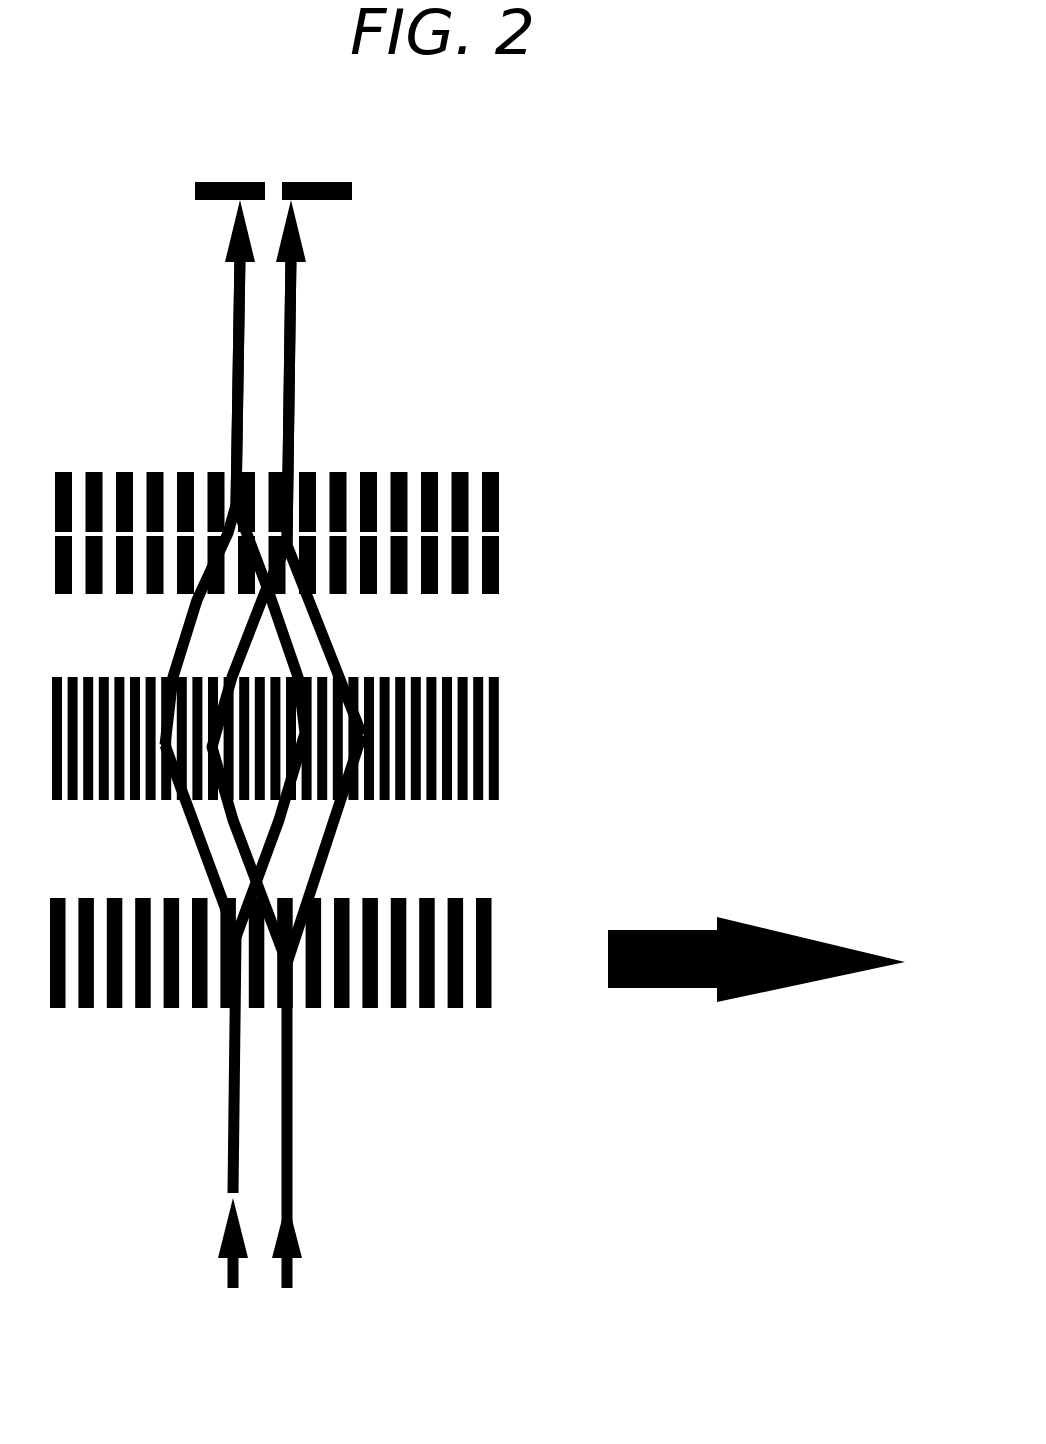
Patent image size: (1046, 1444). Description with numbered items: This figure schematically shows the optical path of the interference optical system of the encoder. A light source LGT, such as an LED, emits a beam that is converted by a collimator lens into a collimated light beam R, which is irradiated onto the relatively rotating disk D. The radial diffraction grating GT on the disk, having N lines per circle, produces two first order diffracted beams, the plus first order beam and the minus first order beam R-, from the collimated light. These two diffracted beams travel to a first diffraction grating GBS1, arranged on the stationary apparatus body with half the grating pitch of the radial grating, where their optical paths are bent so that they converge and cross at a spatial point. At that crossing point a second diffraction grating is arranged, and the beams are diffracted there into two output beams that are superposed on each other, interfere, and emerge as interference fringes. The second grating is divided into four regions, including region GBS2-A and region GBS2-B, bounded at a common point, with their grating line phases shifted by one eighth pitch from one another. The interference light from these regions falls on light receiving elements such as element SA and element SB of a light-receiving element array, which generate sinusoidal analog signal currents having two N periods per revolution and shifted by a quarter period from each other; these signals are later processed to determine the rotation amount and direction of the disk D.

The light receiving element SA is at (183, 134).
The light receiving element SB is at (407, 134).
The second diffraction grating region GBS2-A is at (821, 490).
The second diffraction grating region GBS2-B is at (823, 551).
The first diffraction grating GBS1 is at (338, 738).
The radial diffraction grating GT is at (315, 949).
The disk D is at (756, 974).
The light source LGT is at (260, 1266).
The collimated light beam R is at (284, 1112).
The minus first order diffracted light beam R- is at (182, 841).